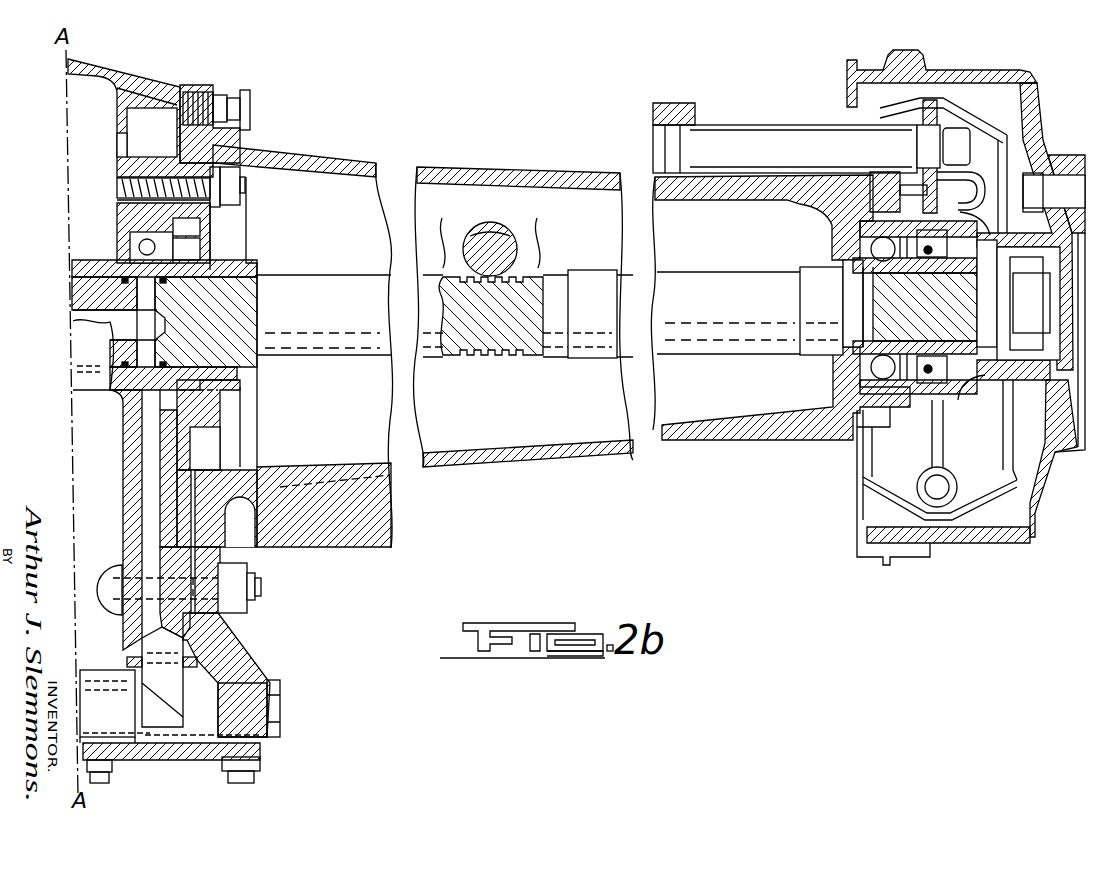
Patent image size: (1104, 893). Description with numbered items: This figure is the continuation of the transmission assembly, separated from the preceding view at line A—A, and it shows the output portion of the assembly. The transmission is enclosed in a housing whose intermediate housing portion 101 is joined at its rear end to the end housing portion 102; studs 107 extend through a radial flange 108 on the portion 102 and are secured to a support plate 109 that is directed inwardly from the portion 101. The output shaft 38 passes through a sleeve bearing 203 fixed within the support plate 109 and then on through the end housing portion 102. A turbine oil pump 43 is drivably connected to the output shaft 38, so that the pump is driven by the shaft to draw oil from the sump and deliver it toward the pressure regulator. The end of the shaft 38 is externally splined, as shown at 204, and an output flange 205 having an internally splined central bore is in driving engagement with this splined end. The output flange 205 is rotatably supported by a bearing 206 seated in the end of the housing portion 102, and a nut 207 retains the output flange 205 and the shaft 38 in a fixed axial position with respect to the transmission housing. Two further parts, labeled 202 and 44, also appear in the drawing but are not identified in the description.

The intermediate housing portion 101 is at (133, 76).
The end housing portion 102 is at (350, 165).
The support plate 109 is at (121, 163).
The shaft 202 is at (73, 321).
The sleeve bearing 203 is at (78, 364).
The output shaft 38 is at (216, 328).
The turbine oil pump 43 is at (519, 245).
The splined portion 44 is at (527, 273).
The bearing 206 is at (856, 248).
The output flange 205 is at (1054, 303).
The nut 207 is at (1020, 293).
The externally splined end of shaft 204 is at (974, 325).
The studs 107 is at (261, 587).
The radial flange 108 is at (210, 618).